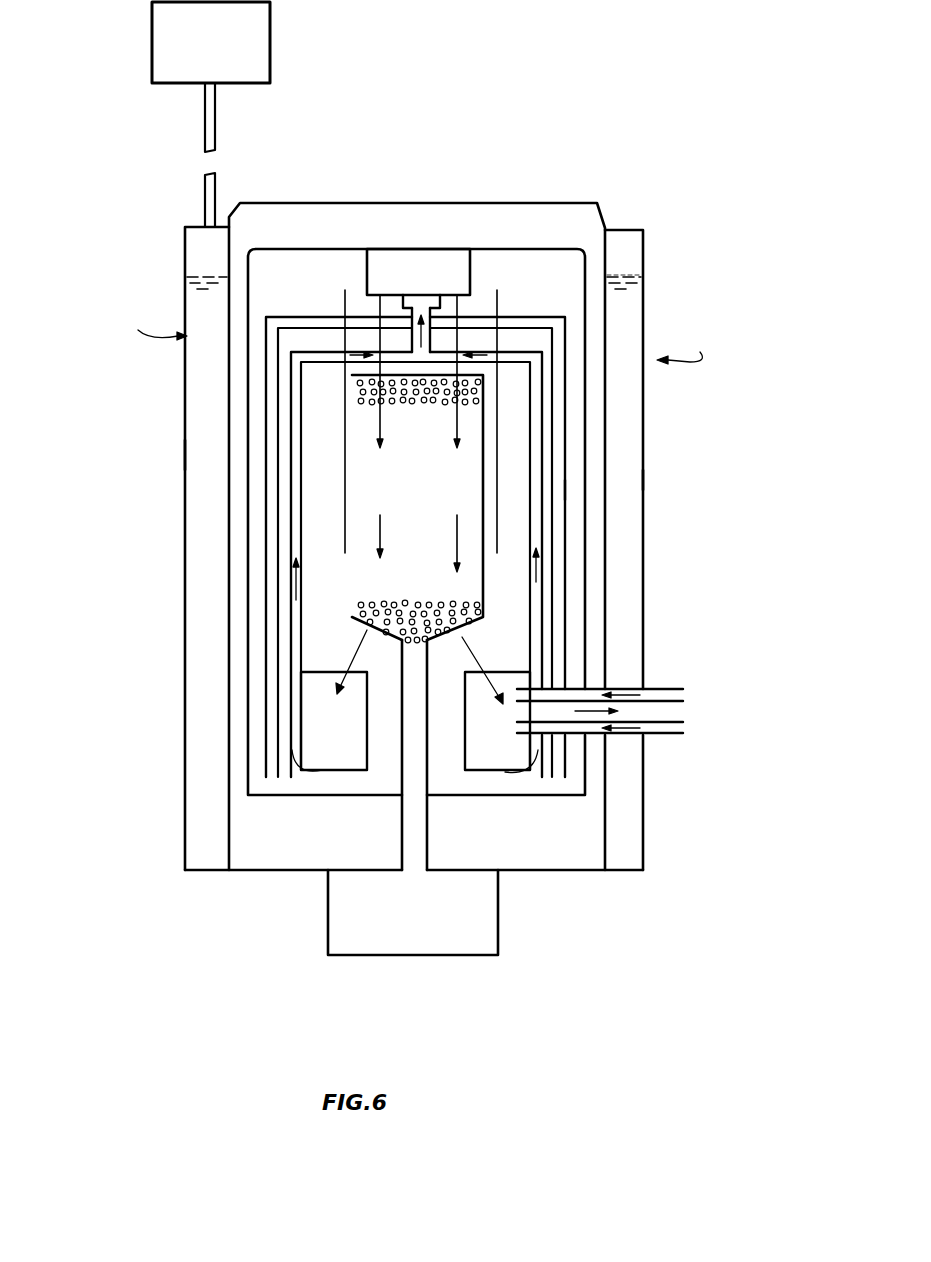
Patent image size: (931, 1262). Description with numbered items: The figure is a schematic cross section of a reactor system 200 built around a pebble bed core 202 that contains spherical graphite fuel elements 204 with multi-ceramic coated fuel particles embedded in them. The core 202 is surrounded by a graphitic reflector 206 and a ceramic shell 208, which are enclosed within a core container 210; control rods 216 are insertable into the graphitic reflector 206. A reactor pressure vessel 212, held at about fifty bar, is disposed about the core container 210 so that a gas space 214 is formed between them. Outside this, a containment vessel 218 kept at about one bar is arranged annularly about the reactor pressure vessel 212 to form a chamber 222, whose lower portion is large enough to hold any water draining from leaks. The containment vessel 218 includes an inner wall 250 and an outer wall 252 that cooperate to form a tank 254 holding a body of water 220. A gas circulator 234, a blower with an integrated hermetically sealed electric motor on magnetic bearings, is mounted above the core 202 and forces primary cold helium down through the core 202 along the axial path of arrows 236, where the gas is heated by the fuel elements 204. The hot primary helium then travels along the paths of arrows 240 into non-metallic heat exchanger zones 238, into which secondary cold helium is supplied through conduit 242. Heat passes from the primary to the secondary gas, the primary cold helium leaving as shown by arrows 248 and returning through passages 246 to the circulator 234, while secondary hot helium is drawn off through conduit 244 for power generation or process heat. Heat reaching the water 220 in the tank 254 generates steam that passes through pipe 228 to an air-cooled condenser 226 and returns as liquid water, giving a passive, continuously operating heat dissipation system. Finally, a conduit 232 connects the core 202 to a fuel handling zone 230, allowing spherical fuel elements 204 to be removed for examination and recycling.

The reactor system 200 is at (800, 451).
The core 202 is at (432, 524).
The spherical fuel elements 204 is at (405, 400).
The graphitic reflector 206 is at (297, 521).
The ceramic shell 208 is at (272, 570).
The core container 210 is at (565, 495).
The reactor pressure vessel 212 is at (590, 300).
The gas space 214 is at (258, 468).
The control rods 216 is at (344, 304).
The containment vessel 218 is at (408, 203).
The water 220 is at (197, 396).
The chamber 222 is at (238, 615).
The condenser 226 is at (270, 57).
The pipe 228 is at (216, 120).
The fuel handling zone 230 is at (488, 915).
The conduit 232 is at (415, 843).
The gas circulator 234 is at (440, 270).
The arrows 236 is at (453, 428).
The heat exchanger zones 238 is at (350, 756).
The arrows 240 is at (358, 660).
The conduit 242 is at (683, 689).
The conduit 244 is at (683, 723).
The passages 246 is at (290, 683).
The arrows 248 is at (352, 356).
The inner wall 250 is at (228, 421).
The outer wall 252 is at (188, 455).
The tank 254 is at (420, 333).